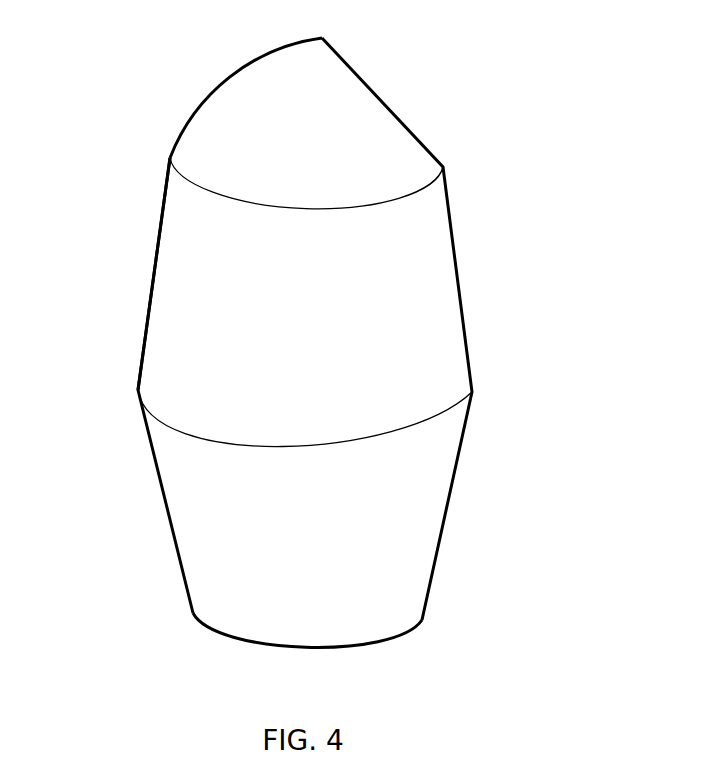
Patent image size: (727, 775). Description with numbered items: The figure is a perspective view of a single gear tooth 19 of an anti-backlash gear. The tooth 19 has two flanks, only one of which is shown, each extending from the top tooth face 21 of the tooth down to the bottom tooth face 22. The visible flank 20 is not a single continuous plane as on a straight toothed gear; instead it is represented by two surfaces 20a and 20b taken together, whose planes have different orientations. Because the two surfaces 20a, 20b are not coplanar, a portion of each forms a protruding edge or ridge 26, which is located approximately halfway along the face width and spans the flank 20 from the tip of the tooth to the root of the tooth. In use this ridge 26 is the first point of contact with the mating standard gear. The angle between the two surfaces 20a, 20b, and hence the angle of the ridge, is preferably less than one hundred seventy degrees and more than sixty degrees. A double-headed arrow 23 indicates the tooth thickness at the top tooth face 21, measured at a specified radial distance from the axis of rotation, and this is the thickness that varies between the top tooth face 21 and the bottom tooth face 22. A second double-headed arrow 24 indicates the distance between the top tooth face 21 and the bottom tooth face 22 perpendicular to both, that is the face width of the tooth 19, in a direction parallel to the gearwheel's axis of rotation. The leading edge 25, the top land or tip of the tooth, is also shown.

The gear tooth 19 is at (457, 86).
The flank 20 is at (363, 525).
The first flank surface 20a is at (363, 260).
The second flank surface 20b is at (378, 568).
The top tooth face 21 is at (270, 132).
The bottom tooth face 22 is at (332, 647).
The tooth thickness arrow 23 is at (300, 50).
The face width arrow 24 is at (193, 615).
The leading edge 25 is at (153, 268).
The protruding ridge 26 is at (278, 448).